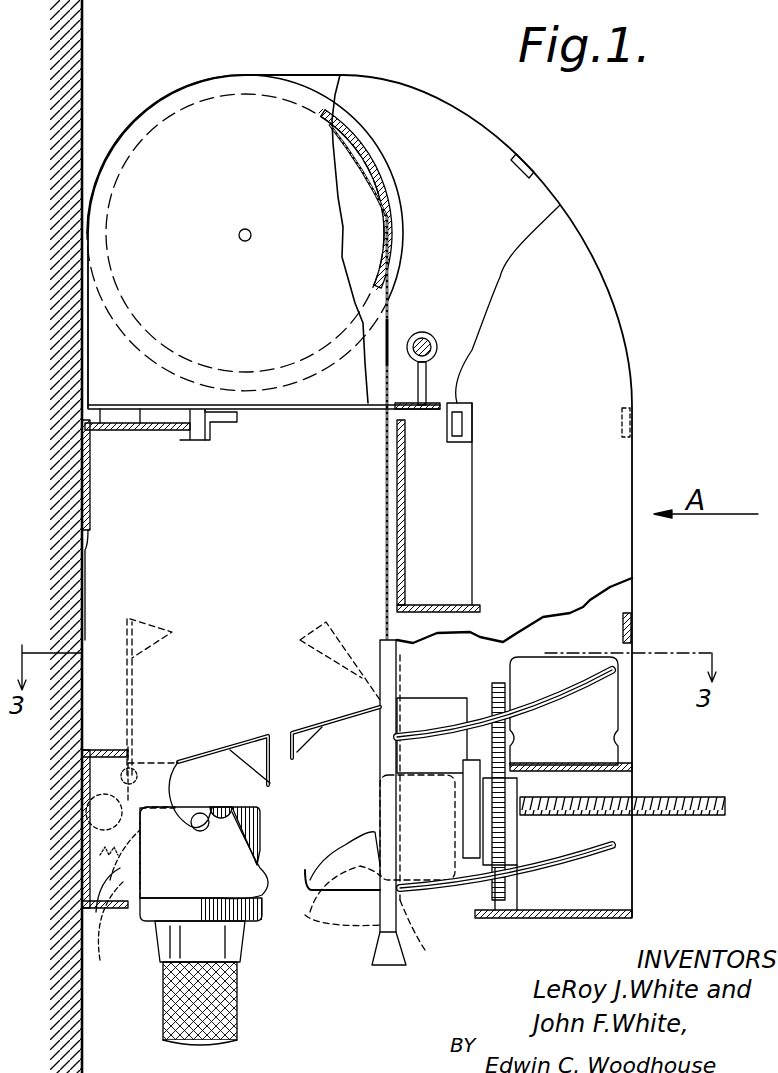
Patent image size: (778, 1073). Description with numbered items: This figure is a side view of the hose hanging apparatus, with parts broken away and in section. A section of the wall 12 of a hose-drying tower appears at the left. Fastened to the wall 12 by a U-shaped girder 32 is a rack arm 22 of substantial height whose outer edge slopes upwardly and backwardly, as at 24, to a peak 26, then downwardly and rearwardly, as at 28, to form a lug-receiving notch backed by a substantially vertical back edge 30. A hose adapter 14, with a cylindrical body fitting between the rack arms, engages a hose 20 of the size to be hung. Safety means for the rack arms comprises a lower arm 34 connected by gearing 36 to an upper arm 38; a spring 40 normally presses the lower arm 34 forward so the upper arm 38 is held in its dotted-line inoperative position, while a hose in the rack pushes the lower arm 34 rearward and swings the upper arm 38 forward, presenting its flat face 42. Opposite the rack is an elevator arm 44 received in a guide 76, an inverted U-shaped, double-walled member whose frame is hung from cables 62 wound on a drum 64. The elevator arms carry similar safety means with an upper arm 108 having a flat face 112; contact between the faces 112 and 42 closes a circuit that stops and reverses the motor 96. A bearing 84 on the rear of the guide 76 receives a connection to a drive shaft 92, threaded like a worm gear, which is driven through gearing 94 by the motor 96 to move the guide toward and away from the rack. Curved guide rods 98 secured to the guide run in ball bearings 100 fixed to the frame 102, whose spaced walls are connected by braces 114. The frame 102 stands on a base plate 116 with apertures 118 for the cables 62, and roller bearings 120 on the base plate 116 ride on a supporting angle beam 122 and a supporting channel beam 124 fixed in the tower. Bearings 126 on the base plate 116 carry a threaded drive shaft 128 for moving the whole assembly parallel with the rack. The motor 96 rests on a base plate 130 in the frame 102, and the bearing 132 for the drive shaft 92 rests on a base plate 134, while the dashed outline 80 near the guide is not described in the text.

The wall 12 is at (83, 58).
The hose adapter 14 is at (255, 816).
The hose 20 is at (225, 995).
The rack arm 22 is at (248, 880).
The upwardly and backwardly sloping outer edge 24 is at (258, 845).
The peak 26 is at (232, 808).
The downwardly and rearwardly sloping edge 28 is at (204, 812).
The back edge 30 is at (172, 769).
The U-shaped girder 32 is at (104, 750).
The lower arm 34 is at (112, 910).
The gearing 36 is at (113, 778).
The upper arm 38 is at (217, 743).
The spring 40 is at (96, 928).
The flat face 42 is at (272, 781).
The elevator arm 44 is at (262, 902).
The cable 62 is at (392, 332).
The drum 64 is at (345, 140).
The guide 76 is at (380, 760).
The bell 80 is at (378, 954).
The bearing 84 is at (496, 908).
The drive shaft 92 is at (660, 815).
The gearing 94 is at (506, 781).
The motor 96 is at (598, 718).
The guide rod 98 is at (614, 680).
The bearing 100 is at (402, 730).
The frame 102 is at (614, 309).
The upper arm 108 is at (317, 718).
The flat face 112 is at (293, 745).
The brace 114 is at (532, 167).
The base plate 116 is at (300, 412).
The aperture 118 is at (386, 410).
The roller bearing 120 is at (118, 432).
The supporting angle beam 122 is at (90, 514).
The supporting channel beam 124 is at (398, 520).
The bearing 126 is at (438, 352).
The threaded drive shaft 128 is at (443, 335).
The base plate 130 is at (632, 768).
The bearing 132 is at (480, 829).
The base plate 134 is at (632, 915).